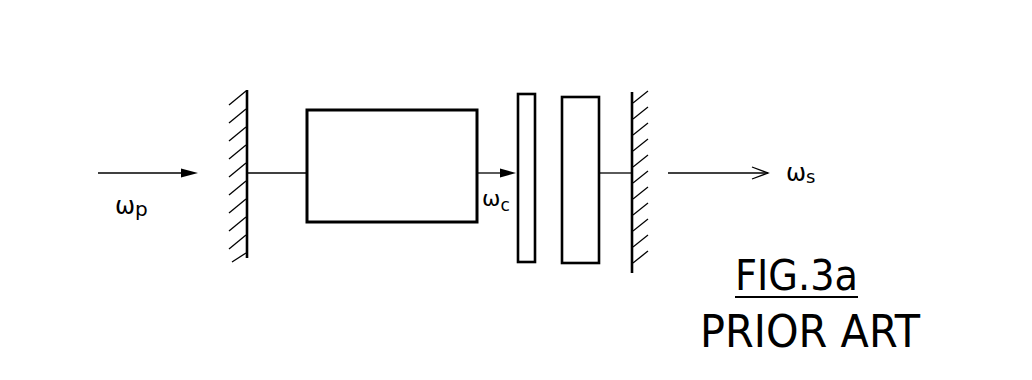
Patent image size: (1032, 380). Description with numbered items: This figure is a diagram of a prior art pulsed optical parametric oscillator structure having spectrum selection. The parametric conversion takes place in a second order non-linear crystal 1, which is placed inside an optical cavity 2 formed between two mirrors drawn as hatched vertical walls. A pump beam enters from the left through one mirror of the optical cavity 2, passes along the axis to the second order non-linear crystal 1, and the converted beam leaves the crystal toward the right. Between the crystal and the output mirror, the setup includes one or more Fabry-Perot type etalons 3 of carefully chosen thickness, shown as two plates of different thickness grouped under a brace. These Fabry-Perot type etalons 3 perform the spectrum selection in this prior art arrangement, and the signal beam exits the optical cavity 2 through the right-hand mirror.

The second order non-linear crystal 1 is at (428, 126).
The optical cavity 2 is at (275, 96).
The Fabry-Perot type etalons 3 is at (603, 78).